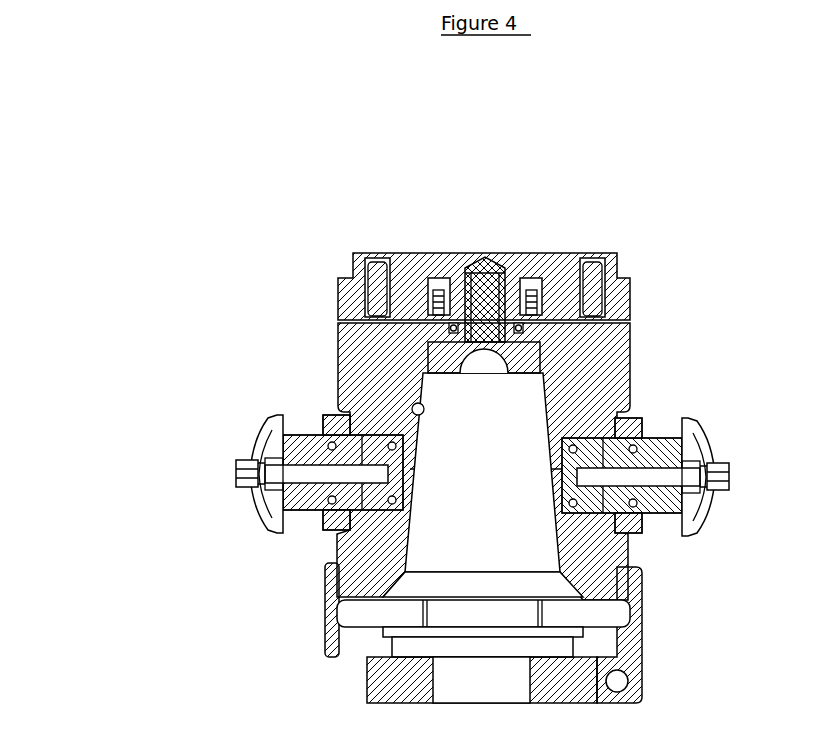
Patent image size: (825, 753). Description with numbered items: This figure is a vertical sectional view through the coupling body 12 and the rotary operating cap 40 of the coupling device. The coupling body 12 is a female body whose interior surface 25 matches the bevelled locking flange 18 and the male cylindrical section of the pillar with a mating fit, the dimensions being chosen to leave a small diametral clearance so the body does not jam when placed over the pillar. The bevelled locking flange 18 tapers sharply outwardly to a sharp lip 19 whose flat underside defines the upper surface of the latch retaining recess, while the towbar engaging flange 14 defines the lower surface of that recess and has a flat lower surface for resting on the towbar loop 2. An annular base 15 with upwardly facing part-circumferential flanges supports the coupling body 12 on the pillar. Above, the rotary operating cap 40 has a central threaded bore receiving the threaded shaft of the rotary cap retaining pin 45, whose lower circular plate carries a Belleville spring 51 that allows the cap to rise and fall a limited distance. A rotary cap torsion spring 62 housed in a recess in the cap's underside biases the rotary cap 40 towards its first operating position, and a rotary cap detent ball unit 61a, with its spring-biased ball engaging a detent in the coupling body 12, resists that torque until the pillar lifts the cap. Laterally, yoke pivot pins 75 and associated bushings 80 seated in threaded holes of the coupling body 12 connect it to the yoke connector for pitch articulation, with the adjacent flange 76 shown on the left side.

The towbar loop 2 is at (630, 680).
The coupling body 12 is at (338, 352).
The towbar engaging flange 14 is at (323, 657).
The annular base 15 is at (327, 620).
The bevelled locking flange 18 is at (327, 570).
The sharp lip 19 is at (327, 598).
The interior surface 25 is at (414, 405).
The rotary operating cap 40 is at (338, 292).
The rotary cap retaining pin 45 is at (458, 266).
The Belleville spring 51 is at (440, 340).
The rotary cap detent ball unit 61a is at (365, 262).
The rotary cap torsion spring 62 is at (522, 282).
The yoke pivot pin 75 is at (705, 420).
The left flange 76 is at (253, 443).
The bushing 80 is at (327, 532).